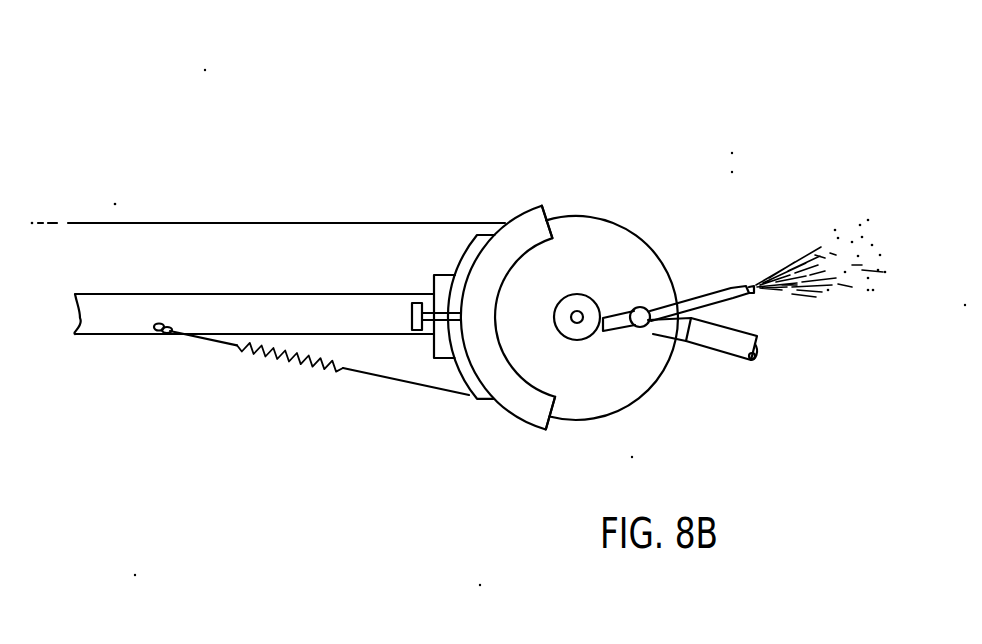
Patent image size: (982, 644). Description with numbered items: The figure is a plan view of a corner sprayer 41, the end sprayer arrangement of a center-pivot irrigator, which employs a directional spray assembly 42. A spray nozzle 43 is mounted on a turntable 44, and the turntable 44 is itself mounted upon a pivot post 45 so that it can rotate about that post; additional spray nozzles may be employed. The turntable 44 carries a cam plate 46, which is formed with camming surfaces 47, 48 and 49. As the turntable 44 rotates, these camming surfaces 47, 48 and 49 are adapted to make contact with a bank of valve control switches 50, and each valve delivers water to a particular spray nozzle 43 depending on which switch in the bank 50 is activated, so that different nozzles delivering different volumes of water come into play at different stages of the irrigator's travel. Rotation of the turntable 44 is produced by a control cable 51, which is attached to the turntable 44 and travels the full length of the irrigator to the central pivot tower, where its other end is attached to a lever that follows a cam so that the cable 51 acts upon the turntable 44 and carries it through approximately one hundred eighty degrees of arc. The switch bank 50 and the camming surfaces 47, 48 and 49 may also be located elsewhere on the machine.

The corner sprayer 41 is at (341, 148).
The directional spray assembly 42 is at (631, 184).
The spray nozzle 43 is at (702, 290).
The turntable 44 is at (590, 235).
The pivot post 45 is at (580, 312).
The cam plate 46 is at (517, 222).
The camming surface 47 is at (448, 275).
The camming surface 48 is at (485, 235).
The camming surface 49 is at (550, 220).
The bank of valve control switches 50 is at (404, 303).
The control cable 51 is at (158, 223).